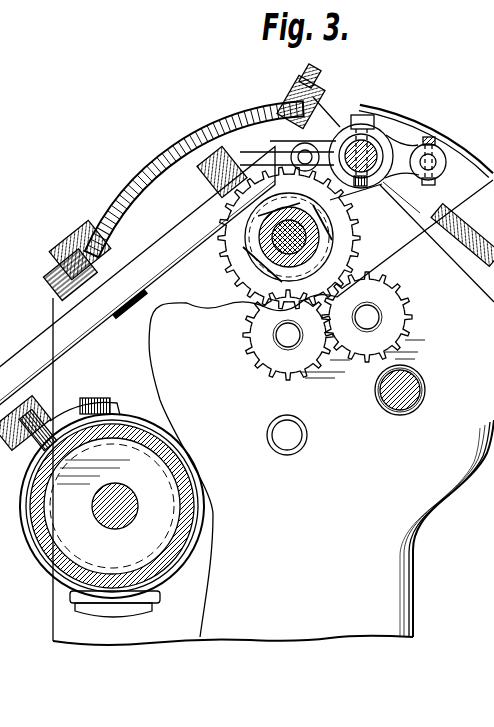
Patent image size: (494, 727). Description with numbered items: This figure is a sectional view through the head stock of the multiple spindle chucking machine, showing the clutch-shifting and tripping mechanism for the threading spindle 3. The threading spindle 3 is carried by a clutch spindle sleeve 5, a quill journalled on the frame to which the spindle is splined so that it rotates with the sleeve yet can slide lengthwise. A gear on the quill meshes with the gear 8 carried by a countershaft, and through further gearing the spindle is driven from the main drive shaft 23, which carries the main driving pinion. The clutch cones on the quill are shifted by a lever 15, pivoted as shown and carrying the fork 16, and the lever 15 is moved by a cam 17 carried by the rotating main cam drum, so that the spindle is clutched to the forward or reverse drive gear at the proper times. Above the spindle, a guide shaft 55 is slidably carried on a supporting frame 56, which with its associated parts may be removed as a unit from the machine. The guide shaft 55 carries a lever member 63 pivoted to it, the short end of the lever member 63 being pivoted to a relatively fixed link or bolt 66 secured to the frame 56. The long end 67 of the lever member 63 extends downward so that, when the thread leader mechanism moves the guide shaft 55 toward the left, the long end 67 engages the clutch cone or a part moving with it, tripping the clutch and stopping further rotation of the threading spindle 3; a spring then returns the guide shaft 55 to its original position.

The threading spindle 3 is at (257, 266).
The clutch spindle sleeve 5 is at (313, 237).
The gear 8 is at (33, 533).
The lever 15 is at (168, 242).
The fork 16 is at (258, 246).
The cam 17 is at (100, 401).
The main drive shaft 23 is at (380, 402).
The guide shaft 55 is at (385, 141).
The supporting frame 56 is at (490, 298).
The lever member 63 is at (372, 152).
The link or bolt 66 is at (430, 157).
The long end 67 is at (256, 152).